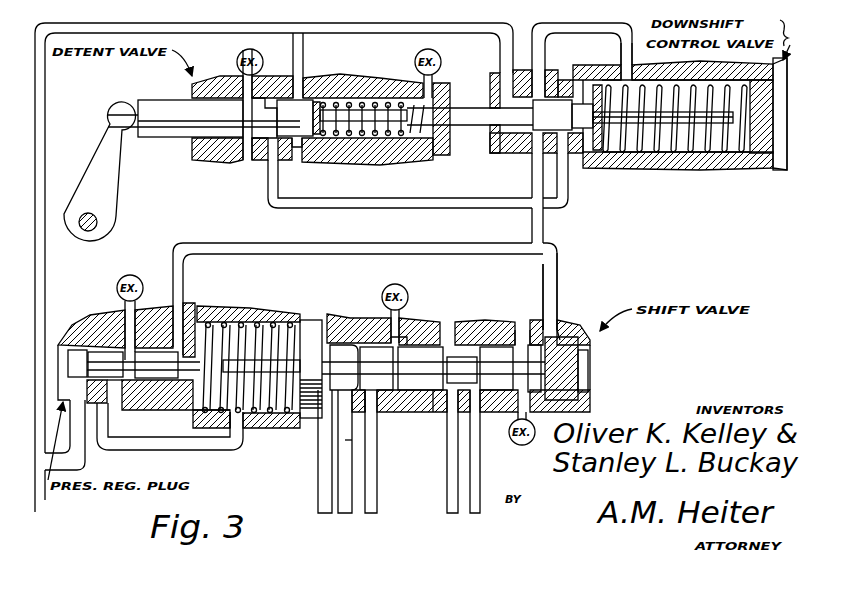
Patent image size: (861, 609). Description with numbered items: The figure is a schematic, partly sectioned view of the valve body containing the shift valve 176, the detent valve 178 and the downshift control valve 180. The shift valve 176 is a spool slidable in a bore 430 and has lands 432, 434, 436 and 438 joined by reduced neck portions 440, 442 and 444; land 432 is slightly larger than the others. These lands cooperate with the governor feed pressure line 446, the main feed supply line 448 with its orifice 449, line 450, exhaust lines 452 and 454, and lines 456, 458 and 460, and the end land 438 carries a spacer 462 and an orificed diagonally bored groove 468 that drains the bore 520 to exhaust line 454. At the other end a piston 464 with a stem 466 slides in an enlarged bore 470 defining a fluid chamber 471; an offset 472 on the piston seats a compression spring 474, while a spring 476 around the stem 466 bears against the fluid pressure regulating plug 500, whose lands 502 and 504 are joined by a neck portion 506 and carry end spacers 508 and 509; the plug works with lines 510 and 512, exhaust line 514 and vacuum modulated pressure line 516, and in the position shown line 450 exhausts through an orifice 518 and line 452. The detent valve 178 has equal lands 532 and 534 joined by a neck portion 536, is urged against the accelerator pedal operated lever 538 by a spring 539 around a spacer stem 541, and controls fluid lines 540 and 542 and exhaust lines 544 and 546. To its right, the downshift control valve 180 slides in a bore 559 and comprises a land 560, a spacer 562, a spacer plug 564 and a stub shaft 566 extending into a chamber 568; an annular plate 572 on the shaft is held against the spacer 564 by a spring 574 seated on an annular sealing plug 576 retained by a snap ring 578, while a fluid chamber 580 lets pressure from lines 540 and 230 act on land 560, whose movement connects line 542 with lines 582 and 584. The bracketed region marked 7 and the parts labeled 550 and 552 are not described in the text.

The downshift control valve assembly 7 is at (789, 40).
The shift valve 176 is at (306, 312).
The detent valve 178 is at (189, 152).
The downshift control valve 180 is at (637, 168).
The fluid pressure line 230 is at (446, 24).
The bore 430 is at (417, 349).
The land 432 is at (360, 348).
The land 434 is at (433, 412).
The land 436 is at (500, 357).
The end land 438 is at (560, 338).
The neck portion 440 is at (373, 412).
The neck portion 442 is at (462, 357).
The neck portion 444 is at (527, 348).
The governor feed pressure line 446 is at (322, 463).
The main feed supply line 448 is at (338, 518).
The orifice 449 is at (352, 442).
The line 450 is at (372, 512).
The exhaust line 452 is at (403, 335).
The exhaust line 454 is at (512, 422).
The line 456 is at (448, 480).
The line 458 is at (468, 508).
The line 460 is at (557, 278).
The spacer 462 is at (592, 375).
The piston 464 is at (313, 420).
The stem 466 is at (287, 333).
The orificed diagonally bored groove 468 is at (592, 343).
The enlarged bore 470 is at (200, 305).
The fluid chamber 471 is at (223, 406).
The offset 472 is at (302, 320).
The compression spring 474 is at (270, 420).
The spring 476 is at (235, 340).
The fluid pressure regulating plug 500 is at (153, 352).
The land 502 is at (132, 398).
The land 504 is at (78, 362).
The reduced neck portion 506 is at (102, 360).
The spacer 508 is at (180, 400).
The spacer 509 is at (65, 368).
The fluid pressure line 510 is at (176, 250).
The fluid pressure line 512 is at (207, 440).
The exhaust line 514 is at (126, 304).
The vacuum modulated pressure line 516 is at (97, 447).
The orifice 518 is at (393, 307).
The bore 520 is at (595, 399).
The land 532 is at (297, 160).
The land 534 is at (162, 130).
The reduced neck portion 536 is at (262, 138).
The accelerator pedal operated lever 538 is at (108, 143).
The spring 539 is at (393, 104).
The fluid pressure line 540 is at (304, 70).
The spacer stem 541 is at (382, 122).
The fluid pressure line 542 is at (275, 203).
The exhaust line 544 is at (241, 78).
The exhaust line 546 is at (436, 86).
The detent valve plug 550 is at (192, 100).
The detent valve land 552 is at (295, 118).
The bore 559 is at (592, 76).
The land 560 is at (500, 142).
The spacer 562 is at (518, 118).
The spacer plug 564 is at (573, 155).
The stub shaft 566 is at (670, 145).
The chamber 568 is at (647, 90).
The annular plate 572 is at (600, 155).
The spring 574 is at (705, 130).
The annular fluid sealing plug 576 is at (760, 152).
The snap ring 578 is at (780, 162).
The fluid chamber 580 is at (507, 103).
The fluid line 582 is at (531, 181).
The fluid line 584 is at (540, 30).